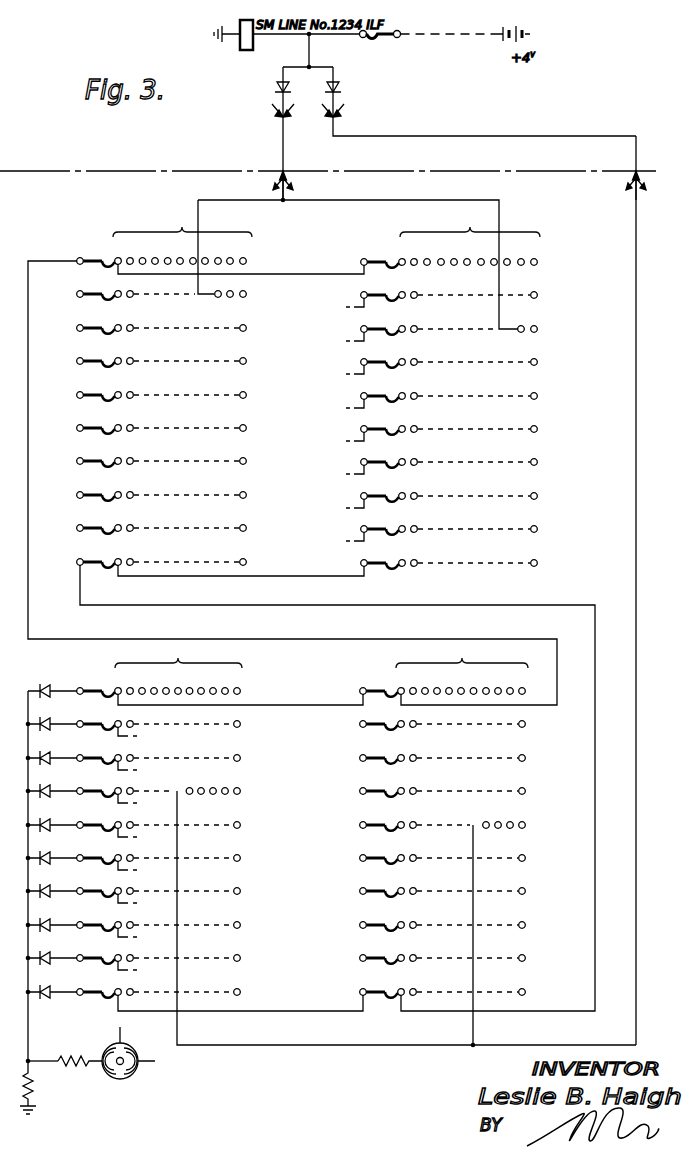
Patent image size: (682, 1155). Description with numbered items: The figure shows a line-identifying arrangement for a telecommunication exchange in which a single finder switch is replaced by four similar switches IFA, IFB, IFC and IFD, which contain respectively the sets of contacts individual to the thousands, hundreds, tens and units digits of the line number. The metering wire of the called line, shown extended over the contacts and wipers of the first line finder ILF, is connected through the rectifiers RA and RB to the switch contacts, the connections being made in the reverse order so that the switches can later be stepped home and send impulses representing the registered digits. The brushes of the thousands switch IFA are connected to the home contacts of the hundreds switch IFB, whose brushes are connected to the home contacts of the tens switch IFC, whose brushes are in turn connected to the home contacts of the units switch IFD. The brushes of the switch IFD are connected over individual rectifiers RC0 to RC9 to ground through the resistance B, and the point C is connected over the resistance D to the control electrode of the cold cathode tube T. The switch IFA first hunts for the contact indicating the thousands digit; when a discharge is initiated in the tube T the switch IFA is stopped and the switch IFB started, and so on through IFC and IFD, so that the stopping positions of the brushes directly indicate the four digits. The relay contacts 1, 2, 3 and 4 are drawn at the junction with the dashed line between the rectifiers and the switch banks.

The rectifier RA is at (274, 133).
The rectifier RB is at (479, 101).
The relay contact 1 is at (282, 171).
The relay contact 2 is at (290, 176).
The relay contact 3 is at (633, 171).
The relay contact 4 is at (643, 176).
The first line finder ILF is at (380, 35).
The hundreds switch IFB is at (336, 612).
The thousands switch IFA is at (459, 391).
The units switch IFD is at (331, 852).
The tens switch IFC is at (459, 845).
The individual rectifier RC0 is at (52, 682).
The individual rectifier RC9 is at (53, 1004).
The point C is at (36, 1061).
The resistance D is at (80, 1070).
The cold cathode tube T is at (128, 1065).
The resistance B is at (24, 1087).